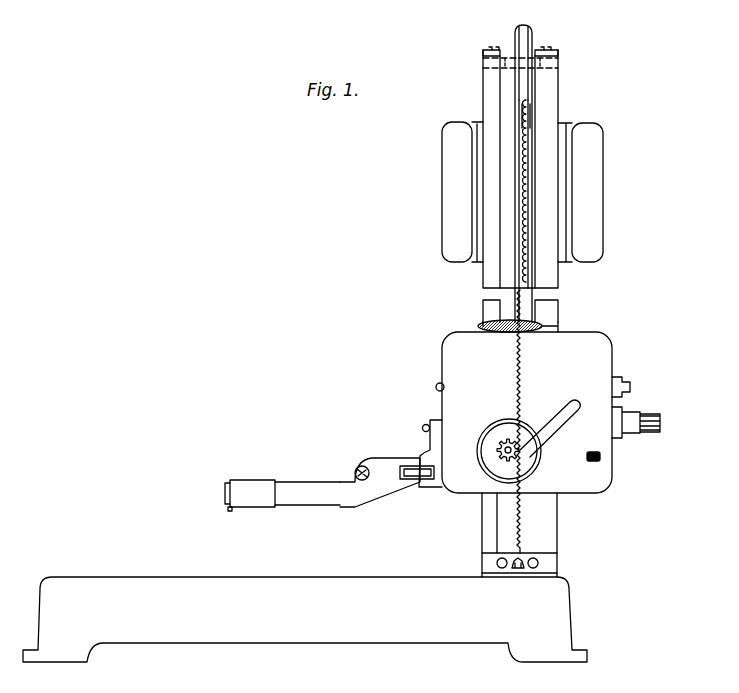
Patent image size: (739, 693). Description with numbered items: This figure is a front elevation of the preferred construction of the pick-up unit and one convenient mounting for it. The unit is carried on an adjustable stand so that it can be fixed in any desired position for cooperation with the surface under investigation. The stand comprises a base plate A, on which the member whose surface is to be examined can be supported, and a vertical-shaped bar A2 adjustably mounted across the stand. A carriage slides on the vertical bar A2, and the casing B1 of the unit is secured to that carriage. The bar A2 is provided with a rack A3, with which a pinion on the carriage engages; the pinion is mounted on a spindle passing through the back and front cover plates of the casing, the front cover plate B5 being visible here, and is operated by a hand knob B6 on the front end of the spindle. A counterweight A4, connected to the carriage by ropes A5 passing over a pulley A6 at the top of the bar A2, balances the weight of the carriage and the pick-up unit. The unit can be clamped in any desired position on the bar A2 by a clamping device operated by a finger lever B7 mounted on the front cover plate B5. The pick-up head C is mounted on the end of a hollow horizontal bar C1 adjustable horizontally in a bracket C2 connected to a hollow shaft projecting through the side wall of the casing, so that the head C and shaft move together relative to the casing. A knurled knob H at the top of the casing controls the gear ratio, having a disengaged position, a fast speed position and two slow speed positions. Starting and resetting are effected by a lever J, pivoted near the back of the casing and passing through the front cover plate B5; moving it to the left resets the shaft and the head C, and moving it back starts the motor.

The base plate A is at (389, 622).
The vertical bar A2 is at (548, 268).
The rack A3 is at (515, 184).
The counterweight A4 is at (588, 158).
The ropes A5 is at (530, 130).
The pulley A6 is at (527, 36).
The knurled knob H is at (484, 322).
The front cover plate B5 is at (588, 358).
The hand knob B6 is at (528, 462).
The finger lever B7 is at (577, 404).
The casing B1 is at (434, 426).
The lever J is at (597, 463).
The pick-up head C is at (240, 492).
The hollow horizontal bar C1 is at (301, 494).
The bracket C2 is at (381, 470).